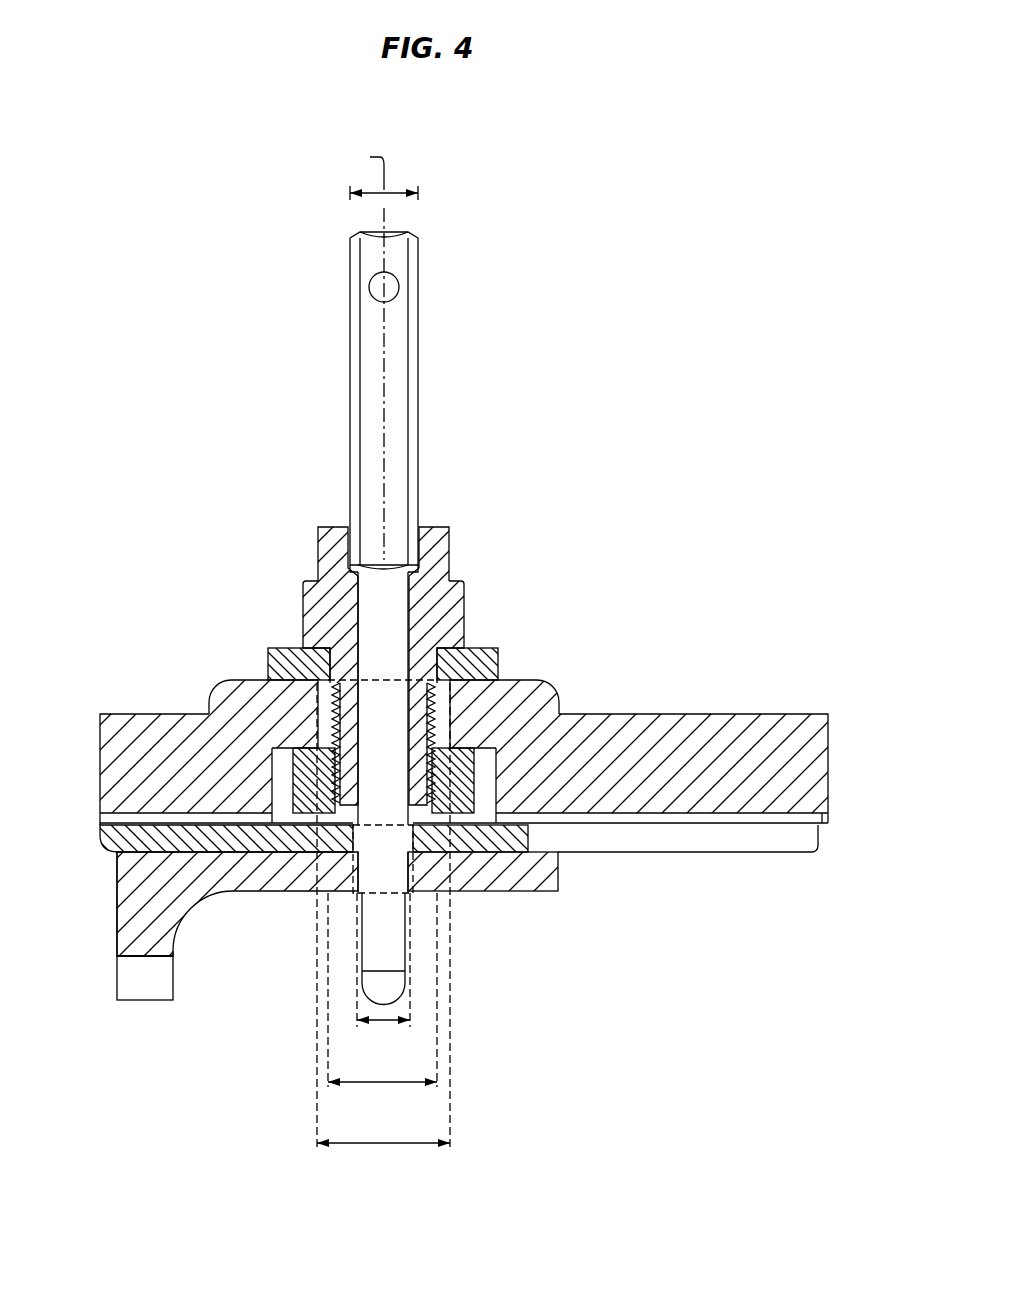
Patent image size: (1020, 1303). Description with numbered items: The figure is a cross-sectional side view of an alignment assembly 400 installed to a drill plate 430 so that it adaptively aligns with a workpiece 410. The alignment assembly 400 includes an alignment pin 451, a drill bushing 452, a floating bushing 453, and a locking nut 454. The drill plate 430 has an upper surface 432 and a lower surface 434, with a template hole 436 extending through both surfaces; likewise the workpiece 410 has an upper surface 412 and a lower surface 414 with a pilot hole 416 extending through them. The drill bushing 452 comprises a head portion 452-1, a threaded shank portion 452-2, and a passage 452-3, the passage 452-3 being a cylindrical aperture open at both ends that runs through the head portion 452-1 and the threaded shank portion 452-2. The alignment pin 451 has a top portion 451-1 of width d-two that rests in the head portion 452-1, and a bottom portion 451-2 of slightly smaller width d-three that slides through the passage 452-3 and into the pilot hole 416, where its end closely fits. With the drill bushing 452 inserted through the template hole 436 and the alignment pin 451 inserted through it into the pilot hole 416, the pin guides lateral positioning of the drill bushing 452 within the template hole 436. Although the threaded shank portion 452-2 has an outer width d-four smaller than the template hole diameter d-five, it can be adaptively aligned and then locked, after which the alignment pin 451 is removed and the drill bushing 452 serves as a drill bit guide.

The alignment assembly 400 is at (688, 290).
The alignment pin 451 is at (346, 458).
The top portion 451-1 is at (415, 466).
The bottom portion 451-2 is at (402, 600).
The drill bushing 452 is at (288, 580).
The head portion 452-1 is at (450, 617).
The threaded shank portion 452-2 is at (508, 683).
The passage 452-3 is at (547, 698).
The floating bushing 453 is at (280, 648).
The drill plate 430 is at (118, 741).
The upper surface 432 is at (814, 708).
The template hole 436 is at (316, 760).
The upper surface 412 is at (523, 811).
The lower surface 434 is at (800, 824).
The lower surface 414 is at (536, 900).
The workpiece 410 is at (122, 882).
The pilot hole 416 is at (393, 872).
The locking nut 454 is at (302, 806).